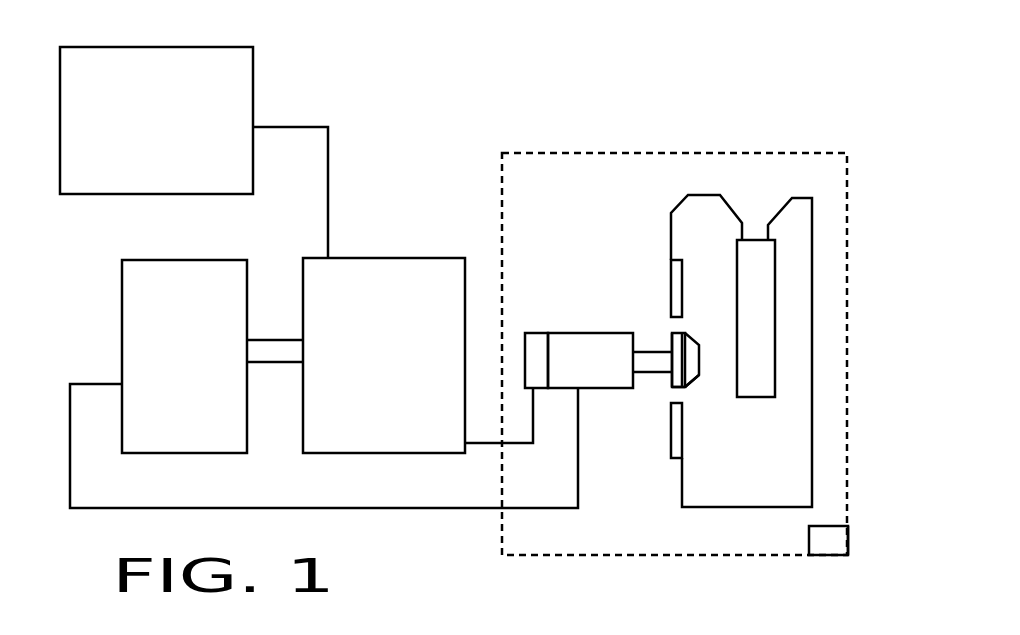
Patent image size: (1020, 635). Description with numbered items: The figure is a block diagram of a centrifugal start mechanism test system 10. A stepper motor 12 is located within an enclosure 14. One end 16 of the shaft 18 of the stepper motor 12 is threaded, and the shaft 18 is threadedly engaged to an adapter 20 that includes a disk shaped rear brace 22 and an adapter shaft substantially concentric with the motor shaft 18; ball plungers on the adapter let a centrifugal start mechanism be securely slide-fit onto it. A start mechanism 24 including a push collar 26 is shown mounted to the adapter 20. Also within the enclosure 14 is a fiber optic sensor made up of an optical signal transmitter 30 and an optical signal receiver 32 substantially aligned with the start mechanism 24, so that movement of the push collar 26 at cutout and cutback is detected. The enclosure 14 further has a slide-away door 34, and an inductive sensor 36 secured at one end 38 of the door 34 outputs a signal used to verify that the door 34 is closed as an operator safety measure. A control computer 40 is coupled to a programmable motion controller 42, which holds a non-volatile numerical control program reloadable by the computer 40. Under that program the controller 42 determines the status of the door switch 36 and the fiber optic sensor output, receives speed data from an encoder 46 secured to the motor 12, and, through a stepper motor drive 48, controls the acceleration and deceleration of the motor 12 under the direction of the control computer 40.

The centrifugal start mechanism test system 10 is at (417, 124).
The stepper motor 12 is at (580, 343).
The enclosure 14 is at (545, 557).
The one end of shaft 16 is at (658, 342).
The shaft 18 is at (653, 362).
The adapter 20 is at (682, 333).
The disk shaped rear brace 22 is at (672, 388).
The start mechanism 24 is at (698, 393).
The push collar 26 is at (701, 364).
The optical signal transmitter 30 is at (669, 264).
The optical signal receiver 32 is at (669, 456).
The slide-away door 34 is at (866, 292).
The inductive sensor 36 is at (808, 535).
The one end of slide-away door 38 is at (860, 532).
The control computer 40 is at (162, 166).
The programmable motion controller 42 is at (412, 416).
The encoder 46 is at (533, 356).
The stepper motor drive 48 is at (197, 409).